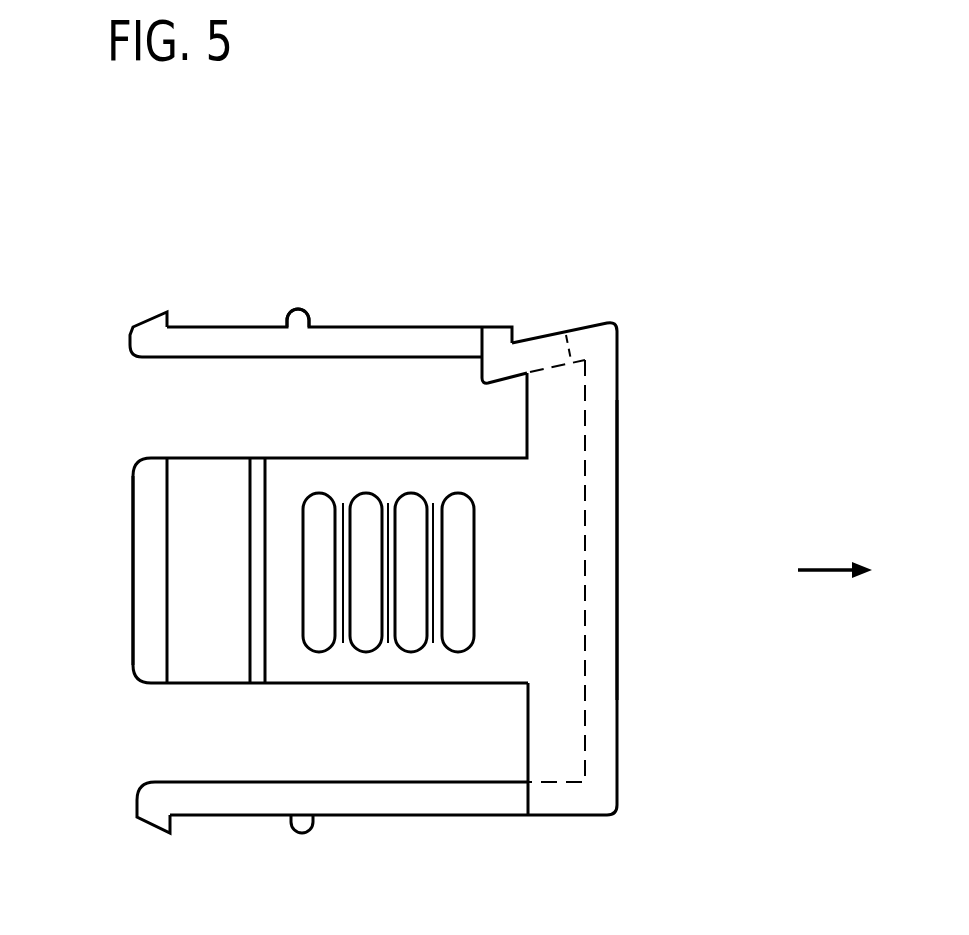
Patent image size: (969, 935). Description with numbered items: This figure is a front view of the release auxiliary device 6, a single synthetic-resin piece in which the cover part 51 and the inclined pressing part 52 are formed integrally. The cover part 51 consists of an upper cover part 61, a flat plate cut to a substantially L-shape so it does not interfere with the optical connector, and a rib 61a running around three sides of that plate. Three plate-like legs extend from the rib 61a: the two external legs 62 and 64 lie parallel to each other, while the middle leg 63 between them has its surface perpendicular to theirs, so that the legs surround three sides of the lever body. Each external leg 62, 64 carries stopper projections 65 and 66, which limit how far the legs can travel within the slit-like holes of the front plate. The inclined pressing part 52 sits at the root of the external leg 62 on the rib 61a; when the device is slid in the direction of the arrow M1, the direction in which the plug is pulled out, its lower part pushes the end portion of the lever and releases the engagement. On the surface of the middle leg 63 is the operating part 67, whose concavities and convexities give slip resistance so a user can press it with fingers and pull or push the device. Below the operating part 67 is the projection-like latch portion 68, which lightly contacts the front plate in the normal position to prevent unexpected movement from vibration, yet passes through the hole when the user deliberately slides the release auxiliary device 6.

The release auxiliary device 6 is at (452, 157).
The cover part 51 is at (617, 423).
The inclined pressing part 52 is at (533, 355).
The upper cover part 61 is at (605, 522).
The rib 61a is at (550, 632).
The external leg 62 is at (397, 330).
The middle leg 63 is at (130, 517).
The external leg 64 is at (423, 805).
The stopper projection 65 is at (152, 330).
The stopper projection 66 is at (298, 310).
The operating part 67 is at (363, 633).
The latch portion 68 is at (247, 645).
The arrow M1 is at (833, 551).